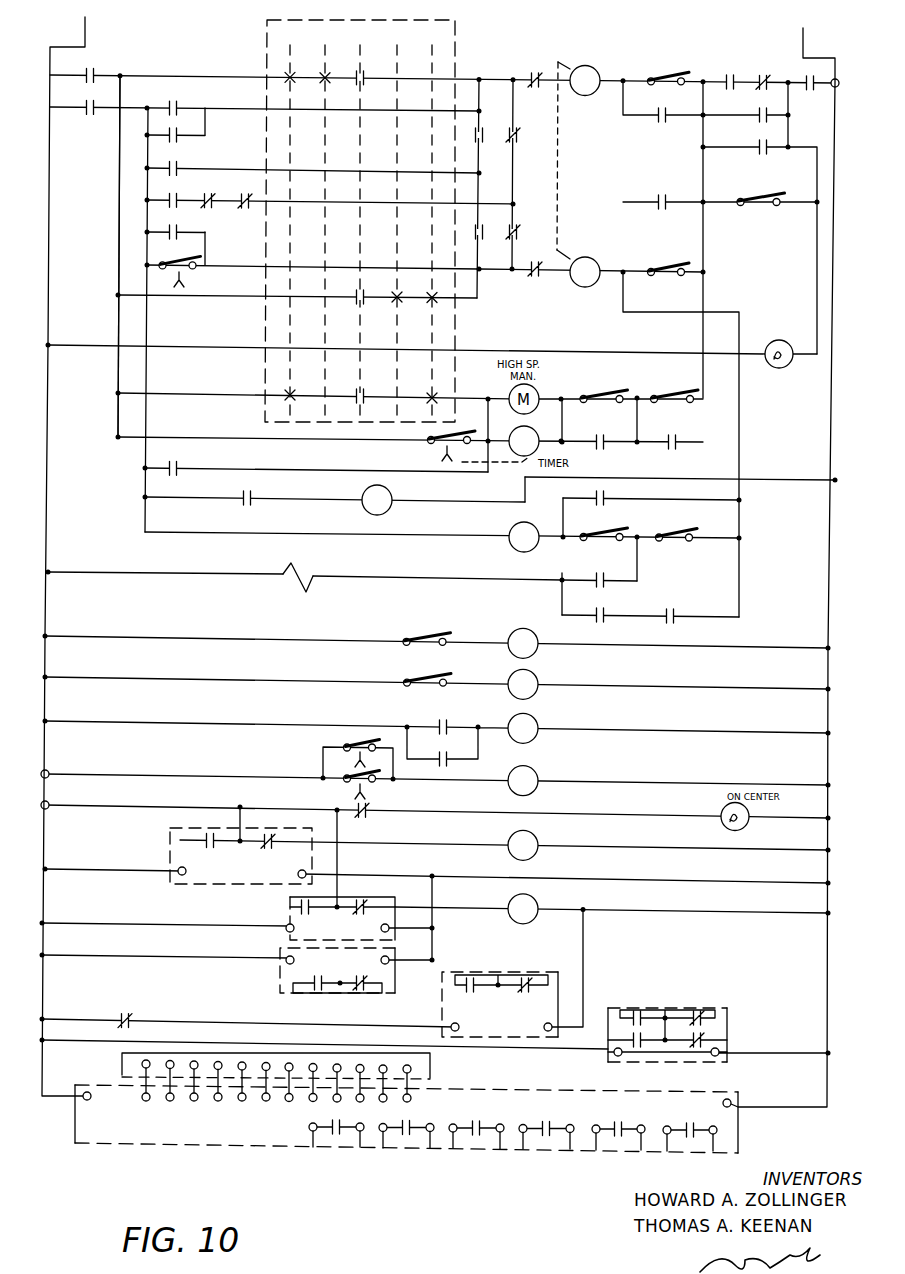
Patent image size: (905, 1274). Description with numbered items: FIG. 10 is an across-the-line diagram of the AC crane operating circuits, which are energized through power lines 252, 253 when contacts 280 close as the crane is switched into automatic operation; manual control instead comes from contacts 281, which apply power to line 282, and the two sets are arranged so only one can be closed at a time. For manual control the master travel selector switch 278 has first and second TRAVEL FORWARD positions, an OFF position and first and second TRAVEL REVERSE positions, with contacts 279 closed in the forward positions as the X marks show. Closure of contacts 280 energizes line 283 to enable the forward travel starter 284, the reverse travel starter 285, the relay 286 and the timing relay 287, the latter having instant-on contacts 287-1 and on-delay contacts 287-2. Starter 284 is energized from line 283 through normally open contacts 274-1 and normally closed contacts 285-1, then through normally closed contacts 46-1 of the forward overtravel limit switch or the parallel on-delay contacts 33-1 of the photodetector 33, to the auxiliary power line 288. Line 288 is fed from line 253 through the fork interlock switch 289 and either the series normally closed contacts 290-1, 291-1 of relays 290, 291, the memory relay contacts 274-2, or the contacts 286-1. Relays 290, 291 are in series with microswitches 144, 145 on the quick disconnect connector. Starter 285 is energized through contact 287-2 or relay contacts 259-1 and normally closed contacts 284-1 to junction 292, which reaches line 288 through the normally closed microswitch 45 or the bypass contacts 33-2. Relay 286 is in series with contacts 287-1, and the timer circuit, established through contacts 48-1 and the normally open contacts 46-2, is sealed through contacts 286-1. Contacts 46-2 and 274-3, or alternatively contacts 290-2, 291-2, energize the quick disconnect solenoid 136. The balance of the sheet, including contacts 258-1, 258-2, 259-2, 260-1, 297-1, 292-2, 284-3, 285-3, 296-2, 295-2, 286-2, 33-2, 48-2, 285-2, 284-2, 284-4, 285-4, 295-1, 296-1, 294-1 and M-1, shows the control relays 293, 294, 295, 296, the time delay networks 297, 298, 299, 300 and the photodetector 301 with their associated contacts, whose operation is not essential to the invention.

The power line 252 is at (85, 32).
The power line 253 is at (808, 43).
The contacts 281 is at (93, 68).
The contacts 280 is at (96, 116).
The master travel selector switch 278 is at (267, 36).
The contacts 279 is at (364, 85).
The line 282 is at (117, 172).
The line 283 is at (144, 486).
The contacts 274-1 is at (180, 103).
The relay contacts 258-1 is at (185, 131).
The contacts 297-1 is at (178, 165).
The contacts 292-2 is at (167, 203).
The relay contacts 258-2 is at (202, 190).
The relay contacts 259-2 is at (266, 190).
The relay contacts 259-1 is at (180, 230).
The on-delay contacts 287-2 is at (170, 272).
The contacts 284-3 is at (476, 138).
The contacts 296-2 is at (521, 130).
The contacts 285-3 is at (476, 228).
The contacts 295-2 is at (517, 223).
The normally closed contacts 285-1 is at (532, 74).
The forward travel starter 284 is at (590, 66).
The normally closed contacts 284-1 is at (543, 278).
The reverse travel starter 285 is at (585, 257).
The normally closed contacts 46-1 is at (665, 74).
The normally closed contacts 290-1 is at (726, 72).
The normally closed contacts 291-1 is at (760, 73).
The fork interlock switch 289 is at (815, 92).
The on-delay contacts 33-1 is at (655, 110).
The contacts 274-2 is at (755, 124).
The contacts 286-2 is at (770, 155).
The normally open contacts 33-2 is at (660, 193).
The contacts 48-2 is at (747, 207).
The microswitch 45 is at (668, 265).
The auxiliary power line 288 is at (713, 252).
The junction 292 is at (618, 280).
The contacts 285-2 is at (603, 446).
The contacts 284-2 is at (678, 447).
The contacts 286-1 is at (612, 499).
The contacts 48-1 is at (603, 523).
The normally open contacts 46-2 is at (675, 534).
The contacts 274-3 is at (612, 582).
The contacts 290-2 is at (612, 622).
The contacts 291-2 is at (682, 618).
The relay contacts 260-1 is at (182, 461).
The instant-on contacts 287-1 is at (240, 507).
The relay 286 is at (367, 512).
The timing relay 287 is at (511, 545).
The quick disconnect solenoid 136 is at (307, 569).
The microswitch 144 is at (430, 633).
The microswitch 145 is at (423, 677).
The relay 290 is at (538, 650).
The relay 291 is at (543, 693).
The control relay 293 is at (543, 740).
The control relay 294 is at (543, 788).
The control relay 295 is at (543, 853).
The control relay 296 is at (540, 896).
The contacts 284-4 is at (433, 723).
The contacts 285-4 is at (453, 755).
The contacts 295-1 is at (342, 742).
The contacts 296-1 is at (347, 772).
The contacts 294-1 is at (368, 805).
The time delay network 300 is at (256, 876).
The time delay network 299 is at (273, 933).
The time delay network 298 is at (272, 977).
The time delay network 297 is at (560, 985).
The photodetector 33 is at (735, 1022).
The photodetector 301 is at (740, 1093).
The contacts M-1 is at (120, 1015).